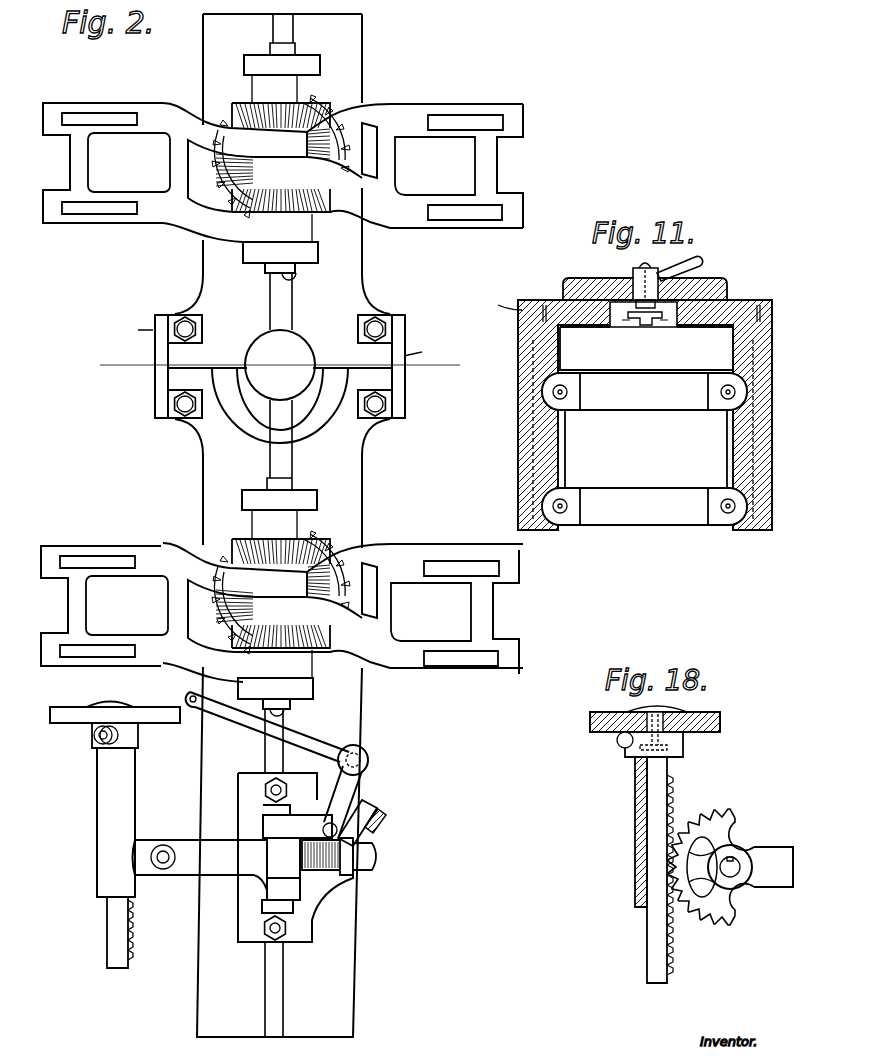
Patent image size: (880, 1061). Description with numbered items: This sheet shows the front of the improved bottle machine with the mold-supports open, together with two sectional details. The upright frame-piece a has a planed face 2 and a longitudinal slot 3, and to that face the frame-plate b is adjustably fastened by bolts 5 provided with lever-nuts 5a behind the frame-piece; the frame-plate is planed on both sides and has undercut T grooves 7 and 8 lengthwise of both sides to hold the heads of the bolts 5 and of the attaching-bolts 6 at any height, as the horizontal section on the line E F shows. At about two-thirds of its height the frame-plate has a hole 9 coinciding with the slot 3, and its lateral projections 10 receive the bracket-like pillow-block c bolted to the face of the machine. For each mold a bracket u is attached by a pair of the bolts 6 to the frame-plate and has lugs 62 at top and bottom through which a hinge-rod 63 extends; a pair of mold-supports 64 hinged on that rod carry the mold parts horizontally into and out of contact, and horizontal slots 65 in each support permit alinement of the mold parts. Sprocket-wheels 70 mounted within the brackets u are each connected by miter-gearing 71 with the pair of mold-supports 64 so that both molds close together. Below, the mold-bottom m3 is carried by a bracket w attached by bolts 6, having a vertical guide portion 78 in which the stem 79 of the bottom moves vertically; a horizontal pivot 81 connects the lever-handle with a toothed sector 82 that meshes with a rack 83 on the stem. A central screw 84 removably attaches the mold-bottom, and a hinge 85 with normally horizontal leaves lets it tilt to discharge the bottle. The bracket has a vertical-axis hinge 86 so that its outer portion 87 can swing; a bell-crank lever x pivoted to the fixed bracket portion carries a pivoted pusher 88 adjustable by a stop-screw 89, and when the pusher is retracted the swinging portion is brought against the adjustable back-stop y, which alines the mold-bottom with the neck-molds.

In FIG. 2, the frame-plate b is at (282, 525).
In FIG. 11, the frame-plate b is at (503, 302).
In FIG. 2, the T groove 8 is at (293, 30).
In FIG. 11, the T groove 8 is at (643, 323).
In FIG. 2, the bracket u is at (281, 297).
In FIG. 2, the mold-supports 64 is at (178, 165).
In FIG. 2, the horizontal slots 65 is at (97, 118).
In FIG. 2, the sprocket-wheels 70 is at (345, 118).
In FIG. 2, the miter-gearing 71 is at (240, 104).
In FIG. 2, the lugs 62 is at (278, 479).
In FIG. 2, the hinge-rod 63 is at (292, 300).
In FIG. 2, the lateral projections 10 is at (185, 313).
In FIG. 11, the lateral projections 10 is at (548, 296).
In FIG. 2, the pillow-block c is at (278, 338).
In FIG. 11, the pillow-block c is at (522, 412).
In FIG. 2, the hole 9 is at (280, 365).
In FIG. 11, the hole 9 is at (623, 327).
In FIG. 2, the section line E F E is at (109, 365).
In FIG. 2, the section line E F is at (434, 365).
In FIG. 2, the mold-bottom m3 is at (55, 716).
In FIG. 18, the mold-bottom m3 is at (592, 722).
In FIG. 2, the hinge 85 is at (115, 737).
In FIG. 18, the hinge 85 is at (618, 745).
In FIG. 2, the vertical guide portion 78 is at (116, 822).
In FIG. 18, the vertical guide portion 78 is at (641, 832).
In FIG. 2, the stem 79 is at (115, 946).
In FIG. 18, the stem 79 is at (659, 882).
In FIG. 2, the bell-crank lever x is at (190, 696).
In FIG. 2, the bracket w is at (318, 890).
In FIG. 2, the attaching-bolts 6 is at (262, 790).
In FIG. 2, the pusher 88 is at (300, 821).
In FIG. 2, the stop-screw 89 is at (372, 812).
In FIG. 2, the hinge 86 is at (281, 875).
In FIG. 2, the outer portion 87 is at (200, 865).
In FIG. 18, the outer portion 87 is at (750, 867).
In FIG. 2, the back-stop y is at (378, 858).
In FIG. 11, the planed face 2 is at (732, 300).
In FIG. 11, the frame-piece a is at (592, 282).
In FIG. 11, the longitudinal slot 3 is at (640, 288).
In FIG. 11, the bolts 5 is at (650, 257).
In FIG. 11, the lever-nuts 5a is at (690, 264).
In FIG. 11, the T groove 7 is at (667, 327).
In FIG. 18, the central screw 84 is at (680, 708).
In FIG. 18, the rack 83 is at (672, 940).
In FIG. 18, the toothed sector 82 is at (728, 922).
In FIG. 18, the horizontal pivot 81 is at (736, 857).